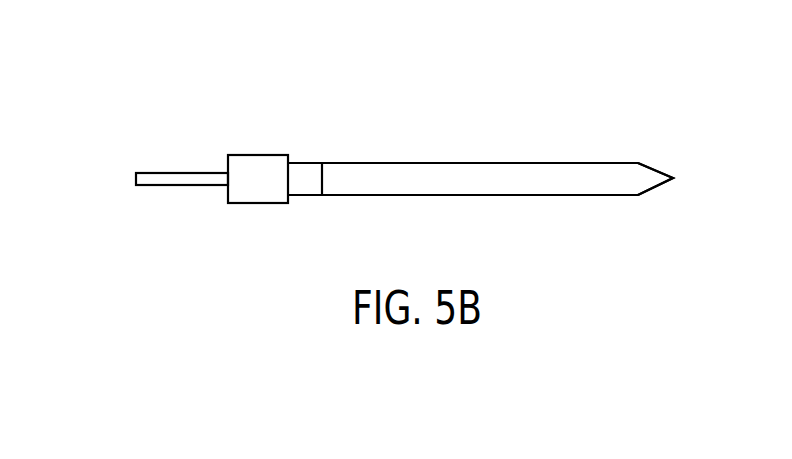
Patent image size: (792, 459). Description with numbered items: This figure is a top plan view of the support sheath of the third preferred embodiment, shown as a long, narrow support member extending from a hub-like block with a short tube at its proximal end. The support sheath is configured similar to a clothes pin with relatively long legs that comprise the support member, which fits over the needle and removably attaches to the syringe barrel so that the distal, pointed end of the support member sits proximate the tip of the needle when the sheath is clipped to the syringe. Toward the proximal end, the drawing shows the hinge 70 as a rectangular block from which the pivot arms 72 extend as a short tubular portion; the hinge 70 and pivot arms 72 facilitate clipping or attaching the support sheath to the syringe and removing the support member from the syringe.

The hinge 70 is at (258, 162).
The pivot arms 72 is at (173, 182).